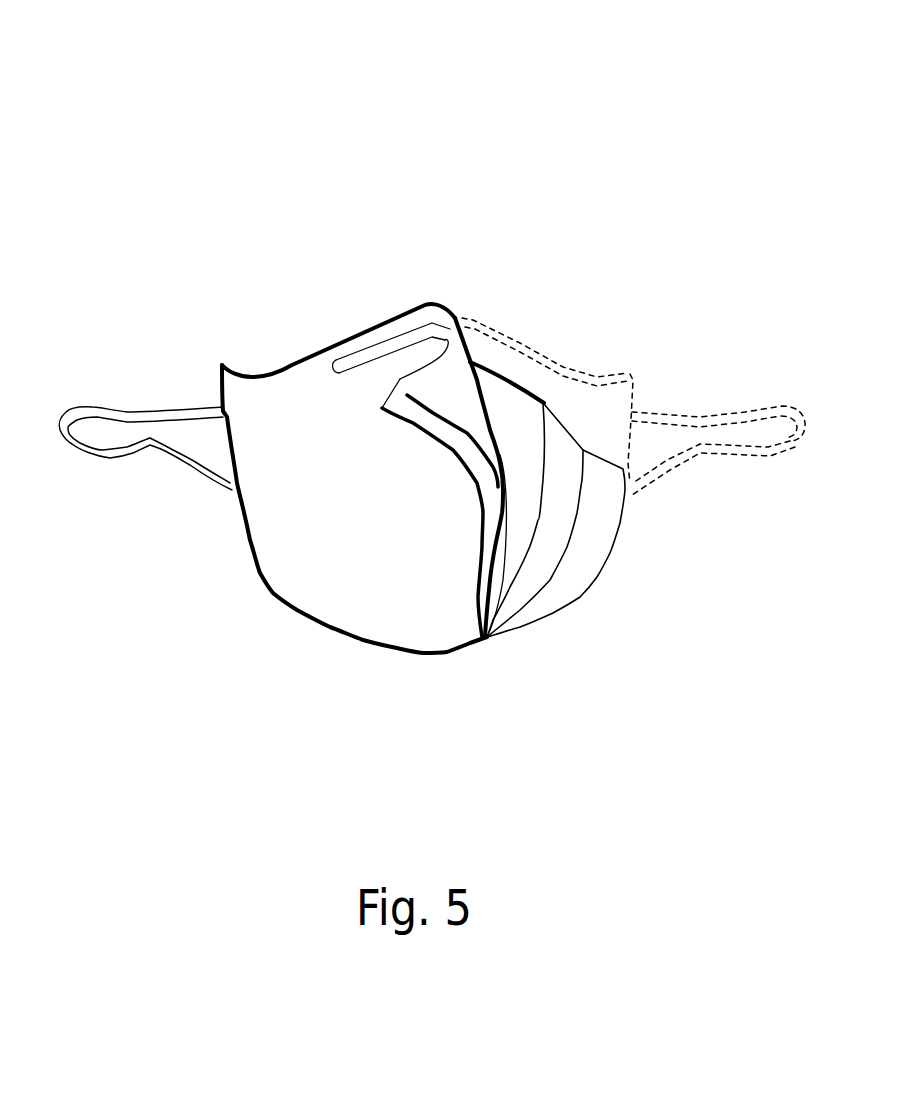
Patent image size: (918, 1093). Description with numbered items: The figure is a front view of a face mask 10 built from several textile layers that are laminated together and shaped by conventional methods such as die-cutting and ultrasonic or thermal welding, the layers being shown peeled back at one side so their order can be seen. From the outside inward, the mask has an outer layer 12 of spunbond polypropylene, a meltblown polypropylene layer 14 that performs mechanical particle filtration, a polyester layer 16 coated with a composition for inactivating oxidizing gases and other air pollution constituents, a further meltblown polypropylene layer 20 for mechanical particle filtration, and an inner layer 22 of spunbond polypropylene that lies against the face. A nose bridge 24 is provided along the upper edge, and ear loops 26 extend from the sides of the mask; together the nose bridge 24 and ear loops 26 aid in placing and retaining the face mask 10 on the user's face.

The face mask 10 is at (238, 190).
The outer layer 12 is at (333, 572).
The meltblown polypropylene layer 14 is at (462, 377).
The coated polyester layer 16 is at (518, 424).
The meltblown polypropylene layer 20 is at (532, 586).
The inner layer 22 is at (584, 563).
The nose bridge 24 is at (380, 345).
The ear loops 26 is at (120, 410).